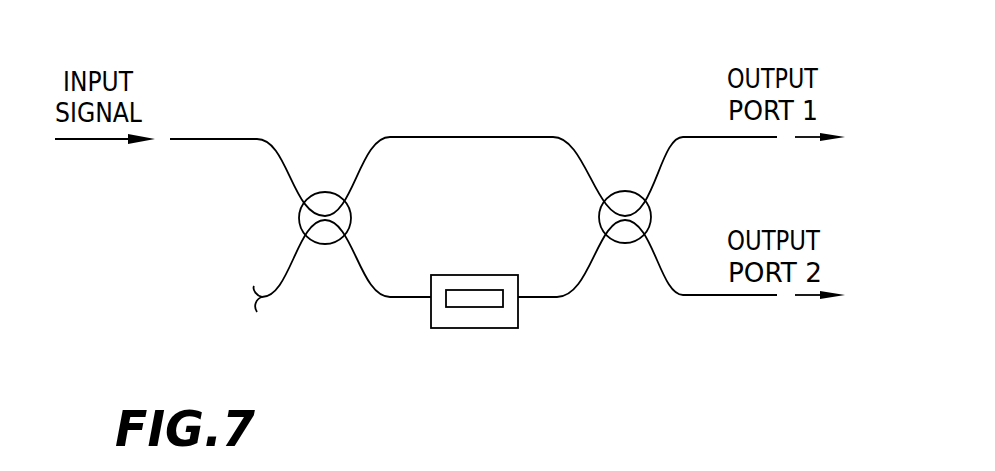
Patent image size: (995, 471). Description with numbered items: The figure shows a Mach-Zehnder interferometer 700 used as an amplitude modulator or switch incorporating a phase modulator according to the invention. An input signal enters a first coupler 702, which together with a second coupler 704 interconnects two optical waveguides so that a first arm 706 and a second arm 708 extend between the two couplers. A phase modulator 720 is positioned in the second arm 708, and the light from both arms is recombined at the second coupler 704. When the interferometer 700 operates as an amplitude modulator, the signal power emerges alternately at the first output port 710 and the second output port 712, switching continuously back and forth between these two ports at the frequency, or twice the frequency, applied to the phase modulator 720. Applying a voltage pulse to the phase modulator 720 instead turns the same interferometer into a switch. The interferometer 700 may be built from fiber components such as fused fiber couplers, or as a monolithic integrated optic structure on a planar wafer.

The Mach-Zehnder interferometer 700 is at (560, 86).
The first coupler 702 is at (326, 192).
The second coupler 704 is at (628, 191).
The first arm 706 is at (453, 137).
The second arm 708 is at (400, 298).
The port 1 710 is at (762, 139).
The port 2 712 is at (762, 297).
The phase modulator 720 is at (473, 275).